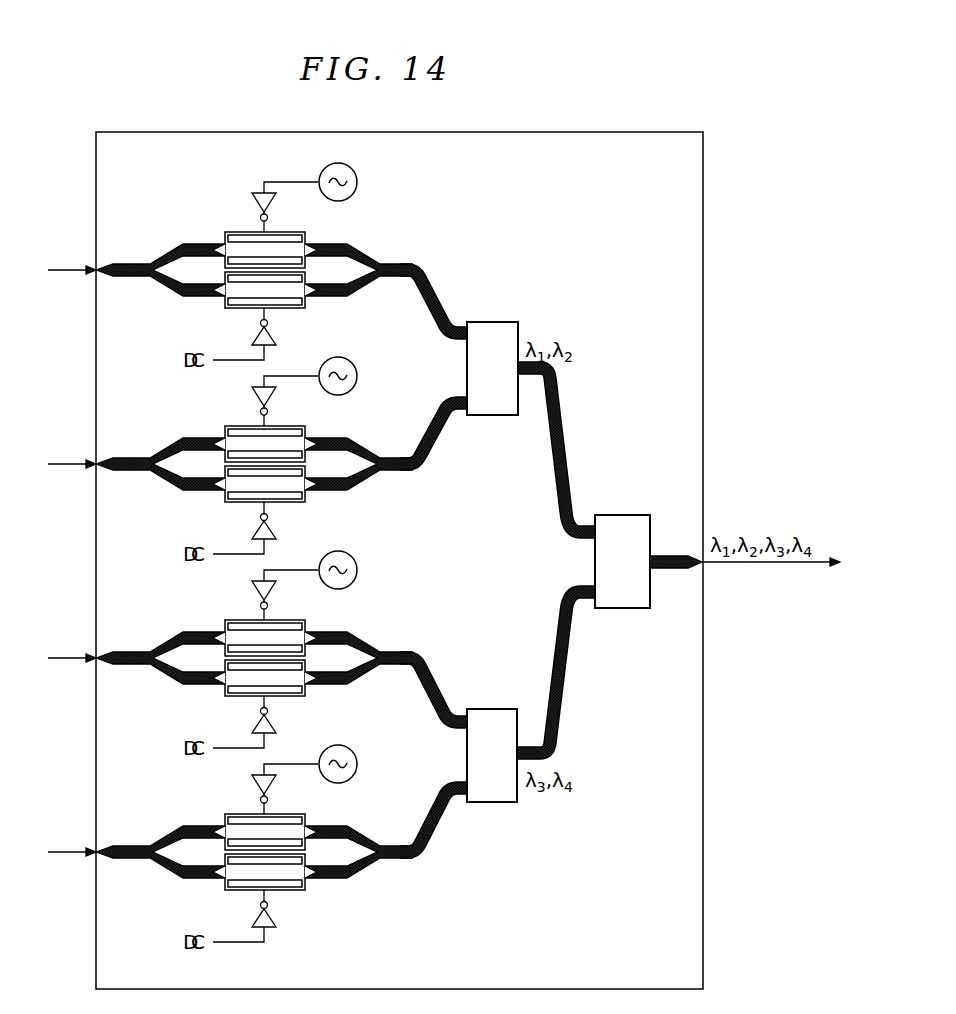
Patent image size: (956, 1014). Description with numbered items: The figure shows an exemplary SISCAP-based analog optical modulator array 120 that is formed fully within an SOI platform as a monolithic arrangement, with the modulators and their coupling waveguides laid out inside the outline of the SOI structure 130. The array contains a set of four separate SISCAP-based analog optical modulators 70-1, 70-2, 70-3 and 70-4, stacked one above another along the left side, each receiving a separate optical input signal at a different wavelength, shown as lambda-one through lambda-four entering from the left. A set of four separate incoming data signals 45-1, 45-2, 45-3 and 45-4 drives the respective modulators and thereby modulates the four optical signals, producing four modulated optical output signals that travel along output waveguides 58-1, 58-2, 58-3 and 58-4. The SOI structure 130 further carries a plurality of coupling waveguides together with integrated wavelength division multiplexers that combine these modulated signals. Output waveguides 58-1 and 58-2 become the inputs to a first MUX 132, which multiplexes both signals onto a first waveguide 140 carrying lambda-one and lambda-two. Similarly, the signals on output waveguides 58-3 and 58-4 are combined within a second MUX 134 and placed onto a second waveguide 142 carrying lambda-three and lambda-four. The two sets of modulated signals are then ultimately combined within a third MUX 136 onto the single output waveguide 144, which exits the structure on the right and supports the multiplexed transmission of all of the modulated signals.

The analog optical modulator array 120 is at (740, 132).
The SOI structure 130 is at (610, 142).
The first MUX 132 is at (495, 322).
The second MUX 134 is at (495, 802).
The third MUX 136 is at (622, 515).
The first waveguide 140 is at (562, 415).
The second waveguide 142 is at (563, 705).
The output waveguide 144 is at (673, 555).
The incoming data signal 45-1 is at (358, 182).
The incoming data signal 45-2 is at (358, 376).
The incoming data signal 45-3 is at (358, 570).
The incoming data signal 45-4 is at (358, 764).
The output waveguide 58-1 is at (433, 284).
The output waveguide 58-2 is at (436, 450).
The output waveguide 58-3 is at (433, 672).
The output waveguide 58-4 is at (432, 842).
The SISCAP-based analog optical modulator 70-1 is at (176, 254).
The SISCAP-based analog optical modulator 70-2 is at (176, 448).
The SISCAP-based analog optical modulator 70-3 is at (176, 642).
The SISCAP-based analog optical modulator 70-4 is at (176, 836).